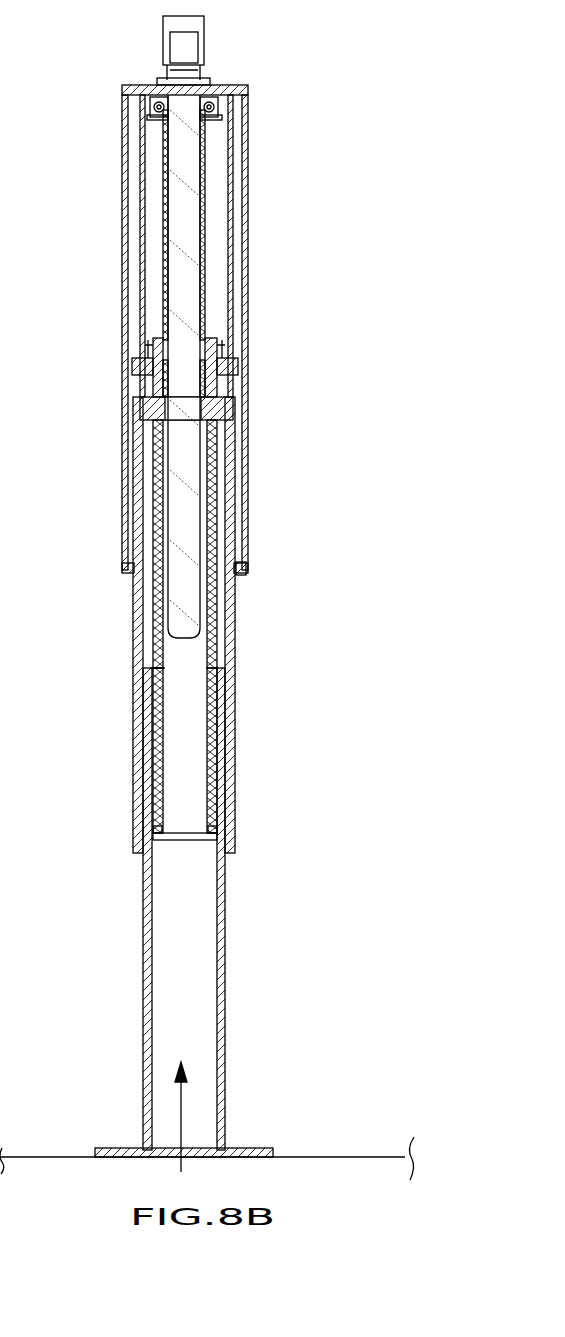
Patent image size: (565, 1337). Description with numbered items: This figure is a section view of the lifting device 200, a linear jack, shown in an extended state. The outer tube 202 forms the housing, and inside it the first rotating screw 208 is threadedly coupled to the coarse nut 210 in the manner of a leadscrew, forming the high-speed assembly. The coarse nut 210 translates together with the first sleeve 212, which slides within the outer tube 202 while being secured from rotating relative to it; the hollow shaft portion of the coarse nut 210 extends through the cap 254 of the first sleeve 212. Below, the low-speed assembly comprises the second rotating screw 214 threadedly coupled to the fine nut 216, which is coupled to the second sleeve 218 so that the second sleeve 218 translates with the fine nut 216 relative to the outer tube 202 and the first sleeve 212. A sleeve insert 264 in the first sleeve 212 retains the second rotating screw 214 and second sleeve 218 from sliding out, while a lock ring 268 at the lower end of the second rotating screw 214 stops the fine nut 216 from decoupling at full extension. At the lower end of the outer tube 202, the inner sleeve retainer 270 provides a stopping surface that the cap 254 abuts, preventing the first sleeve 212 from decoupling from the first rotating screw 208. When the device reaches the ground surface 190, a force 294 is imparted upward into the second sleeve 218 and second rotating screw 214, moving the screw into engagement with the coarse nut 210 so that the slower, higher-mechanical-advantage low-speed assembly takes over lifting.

The ground surface 190 is at (349, 1157).
The lifting device 200 is at (329, 146).
The outer tube 202 is at (125, 280).
The first rotating screw 208 is at (173, 213).
The coarse nut 210 is at (150, 385).
The first sleeve 212 is at (135, 747).
The second rotating screw 214 is at (155, 643).
The fine nut 216 is at (214, 680).
The second sleeve 218 is at (145, 945).
The cap 254 is at (233, 363).
The sleeve insert 264 is at (110, 1148).
The lock ring 268 is at (219, 831).
The inner sleeve retainer 270 is at (244, 572).
The force 294 is at (182, 1125).